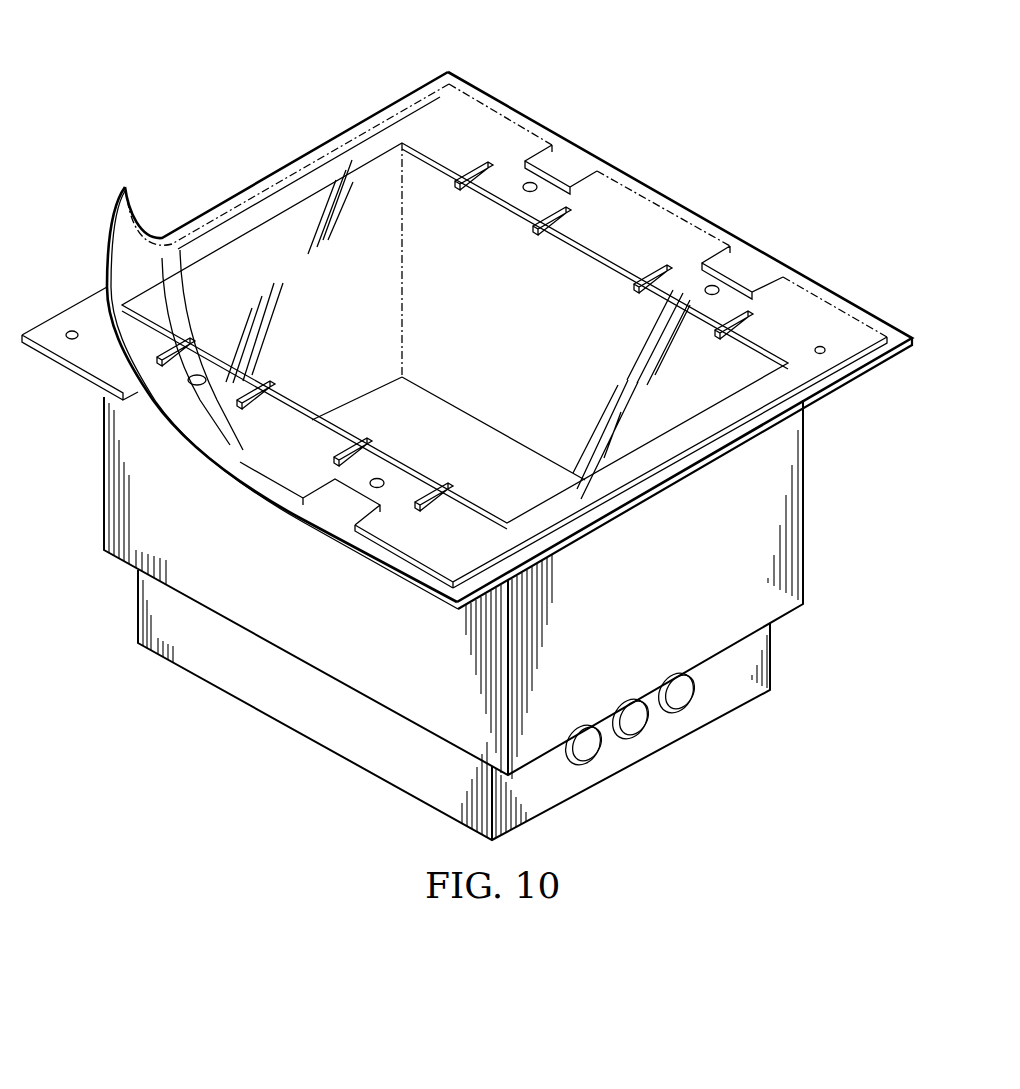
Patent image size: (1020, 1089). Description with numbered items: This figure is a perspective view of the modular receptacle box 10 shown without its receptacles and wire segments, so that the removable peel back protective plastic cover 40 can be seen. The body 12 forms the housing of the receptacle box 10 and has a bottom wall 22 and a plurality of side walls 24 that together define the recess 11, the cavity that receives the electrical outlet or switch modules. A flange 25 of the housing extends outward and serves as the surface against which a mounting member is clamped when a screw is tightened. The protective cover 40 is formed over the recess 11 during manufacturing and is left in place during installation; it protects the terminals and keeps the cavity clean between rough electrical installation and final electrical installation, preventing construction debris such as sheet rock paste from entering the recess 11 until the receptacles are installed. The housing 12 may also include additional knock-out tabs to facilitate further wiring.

The modular receptacle box 10 is at (228, 82).
The recess 11 is at (558, 356).
The body 12 is at (104, 511).
The bottom wall 22 is at (346, 417).
The side walls 24 is at (597, 270).
The flange 25 is at (806, 288).
The removable peel back protective plastic cover 40 is at (567, 158).